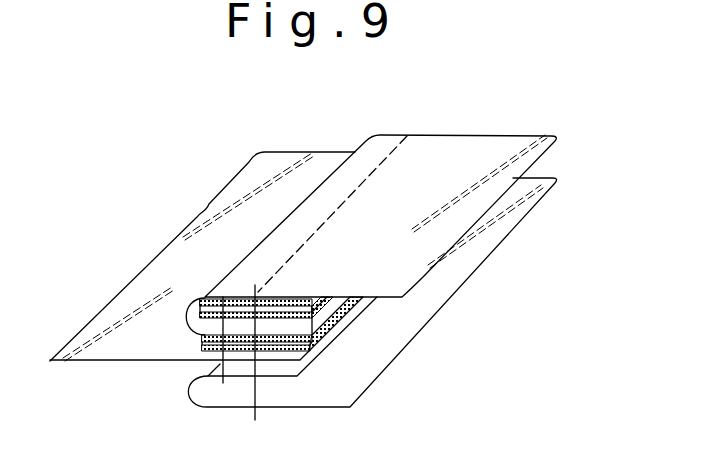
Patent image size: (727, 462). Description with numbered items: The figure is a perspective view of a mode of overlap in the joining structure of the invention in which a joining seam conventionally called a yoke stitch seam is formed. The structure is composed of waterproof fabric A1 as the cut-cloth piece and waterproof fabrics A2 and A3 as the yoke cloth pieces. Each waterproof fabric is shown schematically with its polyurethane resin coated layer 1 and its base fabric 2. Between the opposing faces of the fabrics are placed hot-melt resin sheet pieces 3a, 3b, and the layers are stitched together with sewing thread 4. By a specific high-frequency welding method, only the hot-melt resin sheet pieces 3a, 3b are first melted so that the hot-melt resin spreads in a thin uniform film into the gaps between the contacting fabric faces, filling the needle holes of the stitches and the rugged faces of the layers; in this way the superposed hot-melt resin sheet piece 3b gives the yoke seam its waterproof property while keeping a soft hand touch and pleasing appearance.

The polyurethane resin coated layer 1 is at (316, 242).
The base fabric 2 is at (317, 348).
The hot-melt resin sheet piece 3a is at (205, 302).
The hot-melt resin sheet piece 3b is at (203, 337).
The sewing thread 4 is at (407, 150).
The waterproof fabric A1 is at (236, 178).
The waterproof fabric A2 is at (506, 132).
The waterproof fabric A3 is at (517, 228).